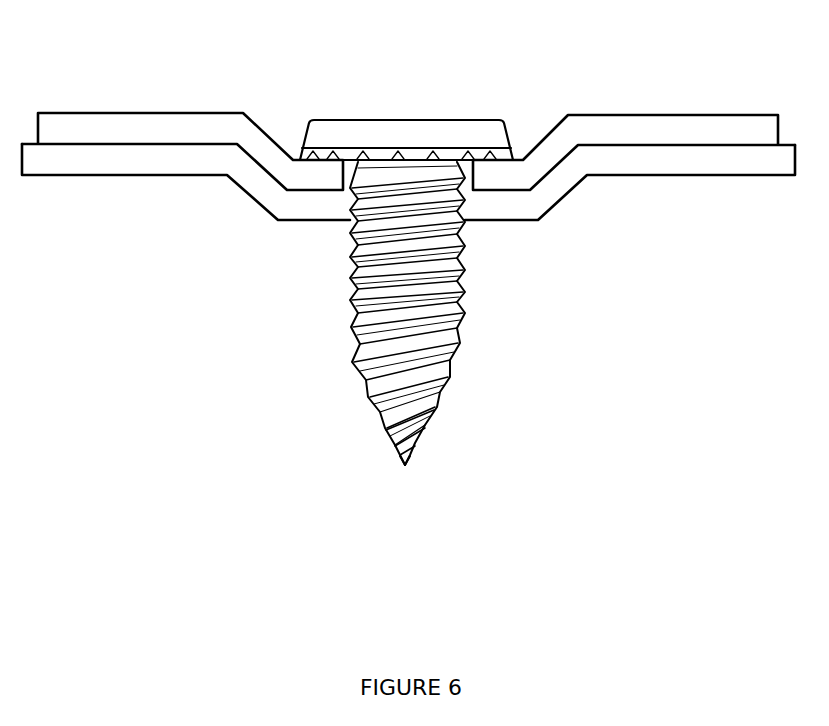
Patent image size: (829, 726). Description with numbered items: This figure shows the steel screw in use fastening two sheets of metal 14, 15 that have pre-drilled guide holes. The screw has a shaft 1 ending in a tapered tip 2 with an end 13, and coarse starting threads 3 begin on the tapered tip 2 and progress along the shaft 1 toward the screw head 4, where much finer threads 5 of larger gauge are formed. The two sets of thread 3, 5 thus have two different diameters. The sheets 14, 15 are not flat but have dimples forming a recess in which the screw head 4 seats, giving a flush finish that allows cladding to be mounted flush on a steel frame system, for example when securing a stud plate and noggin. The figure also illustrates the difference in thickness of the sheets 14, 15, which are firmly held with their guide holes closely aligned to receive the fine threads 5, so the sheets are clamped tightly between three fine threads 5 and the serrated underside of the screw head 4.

The shaft 1 is at (397, 272).
The tapered tip 2 is at (375, 412).
The coarse starting threads 3 is at (460, 350).
The screw head 4 is at (421, 127).
The fine threads 5 is at (444, 313).
The end 13 is at (407, 467).
The sheet of metal 14 is at (138, 123).
The sheet of metal 15 is at (135, 162).